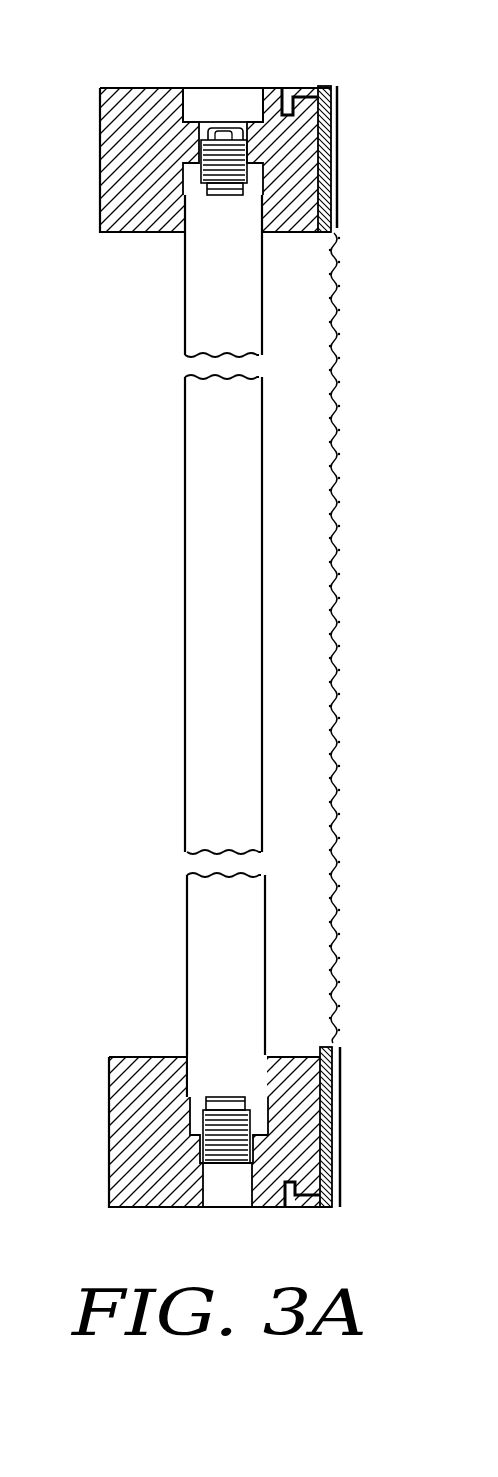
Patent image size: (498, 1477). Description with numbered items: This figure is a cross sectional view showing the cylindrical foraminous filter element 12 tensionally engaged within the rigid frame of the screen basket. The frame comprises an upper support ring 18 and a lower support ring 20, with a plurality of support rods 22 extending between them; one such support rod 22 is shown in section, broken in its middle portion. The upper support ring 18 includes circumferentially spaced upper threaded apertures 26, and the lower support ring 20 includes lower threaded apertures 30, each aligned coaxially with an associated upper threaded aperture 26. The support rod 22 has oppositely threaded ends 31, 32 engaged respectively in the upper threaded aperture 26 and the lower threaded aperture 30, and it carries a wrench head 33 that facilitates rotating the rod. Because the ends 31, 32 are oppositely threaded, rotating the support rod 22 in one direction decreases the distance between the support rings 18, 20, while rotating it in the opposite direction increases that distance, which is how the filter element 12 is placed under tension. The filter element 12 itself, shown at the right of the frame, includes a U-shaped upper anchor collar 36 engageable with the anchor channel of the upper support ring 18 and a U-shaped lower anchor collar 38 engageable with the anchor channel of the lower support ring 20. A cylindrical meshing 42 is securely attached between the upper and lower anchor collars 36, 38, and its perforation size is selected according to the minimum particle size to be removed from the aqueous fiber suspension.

The cylindrical foraminous filter element 12 is at (347, 297).
The upper support ring 18 is at (142, 95).
The lower support ring 20 is at (152, 1192).
The support rod 22 is at (202, 421).
The upper threaded aperture 26 is at (223, 102).
The lower threaded aperture 30 is at (223, 1190).
The threaded end 31 is at (213, 173).
The threaded end 32 is at (233, 1148).
The wrench head 33 is at (218, 130).
The upper anchor collar 36 is at (323, 90).
The lower anchor collar 38 is at (322, 1207).
The cylindrical meshing 42 is at (335, 462).